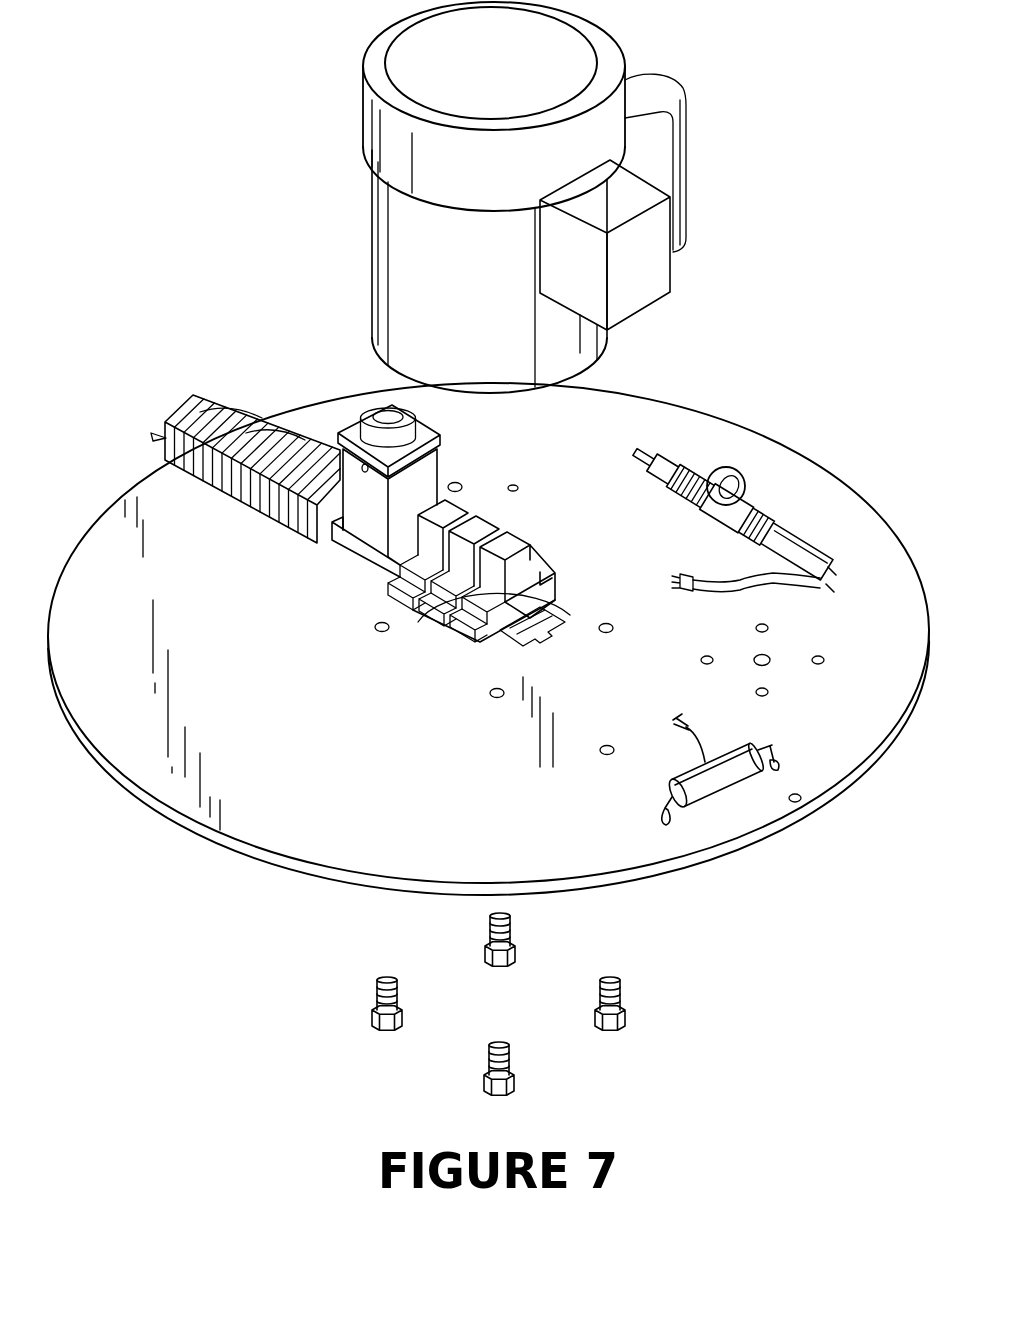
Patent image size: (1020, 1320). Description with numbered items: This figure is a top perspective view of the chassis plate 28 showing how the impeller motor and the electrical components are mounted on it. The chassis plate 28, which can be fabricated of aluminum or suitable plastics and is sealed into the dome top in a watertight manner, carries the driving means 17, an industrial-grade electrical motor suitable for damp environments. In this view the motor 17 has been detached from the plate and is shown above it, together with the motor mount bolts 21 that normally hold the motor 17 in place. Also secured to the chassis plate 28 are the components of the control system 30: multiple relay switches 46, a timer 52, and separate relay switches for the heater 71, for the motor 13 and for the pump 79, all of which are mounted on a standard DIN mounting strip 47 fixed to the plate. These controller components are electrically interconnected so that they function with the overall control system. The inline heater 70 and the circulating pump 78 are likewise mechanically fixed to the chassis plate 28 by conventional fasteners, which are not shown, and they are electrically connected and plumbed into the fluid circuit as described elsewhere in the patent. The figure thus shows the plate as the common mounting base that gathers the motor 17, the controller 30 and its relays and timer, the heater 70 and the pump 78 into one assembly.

The driving means 17 is at (362, 95).
The chassis plate 28 is at (763, 427).
The control system 30 is at (185, 405).
The relay switches 46 is at (222, 488).
The timer 52 is at (373, 507).
The relay switch for the heater 71 is at (397, 595).
The relay switch for the motor 13 is at (442, 610).
The relay switch for the pump 79 is at (540, 562).
The DIN mounting strip 47 is at (560, 637).
The inline heater 70 is at (753, 483).
The circulating pump 78 is at (727, 777).
The motor mount bolts 21 is at (617, 977).